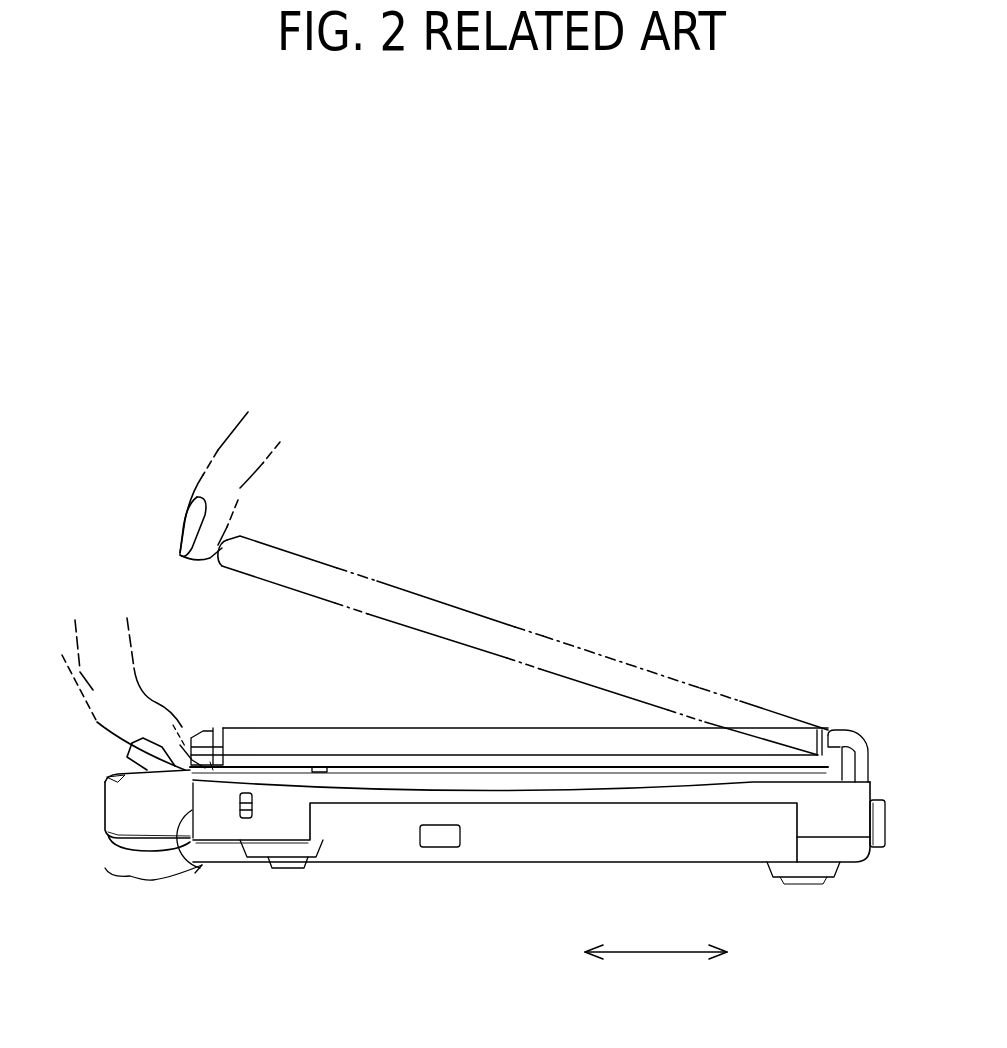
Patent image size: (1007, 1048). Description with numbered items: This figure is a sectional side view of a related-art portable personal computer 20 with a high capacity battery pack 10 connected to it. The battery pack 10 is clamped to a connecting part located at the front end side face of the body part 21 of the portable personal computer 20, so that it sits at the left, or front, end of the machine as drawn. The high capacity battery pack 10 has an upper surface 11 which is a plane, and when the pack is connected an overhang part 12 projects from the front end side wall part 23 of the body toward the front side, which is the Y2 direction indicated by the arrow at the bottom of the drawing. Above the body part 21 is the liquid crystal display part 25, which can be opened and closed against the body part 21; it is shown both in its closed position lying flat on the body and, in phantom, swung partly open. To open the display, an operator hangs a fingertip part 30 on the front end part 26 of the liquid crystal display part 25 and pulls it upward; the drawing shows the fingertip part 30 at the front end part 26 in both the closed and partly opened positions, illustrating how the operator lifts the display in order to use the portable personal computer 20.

The high capacity battery pack 10 is at (107, 847).
The upper surface 11 is at (132, 770).
The overhang part 12 is at (152, 887).
The portable personal computer 20 is at (680, 443).
The body part 21 is at (392, 822).
The front end side wall part 23 is at (195, 875).
The liquid crystal display part 25 is at (503, 628).
The front end part 26 is at (172, 722).
The fingertip part 30 is at (223, 463).